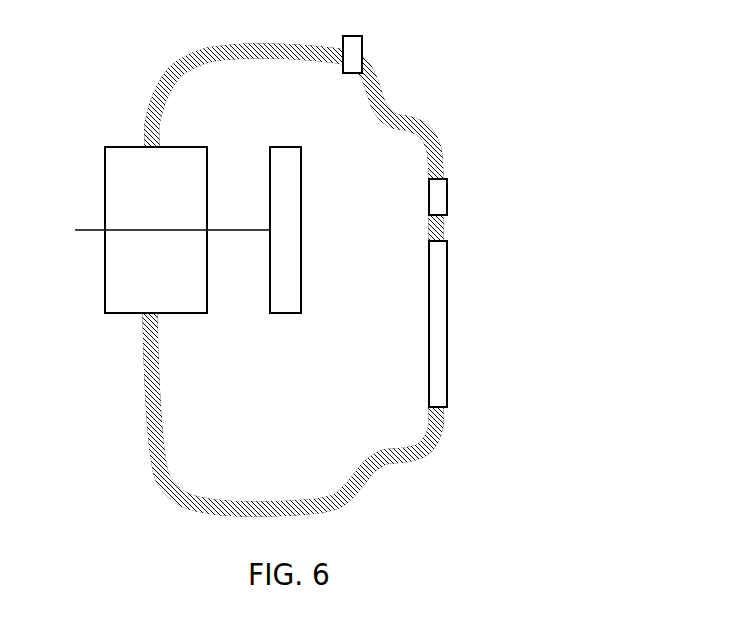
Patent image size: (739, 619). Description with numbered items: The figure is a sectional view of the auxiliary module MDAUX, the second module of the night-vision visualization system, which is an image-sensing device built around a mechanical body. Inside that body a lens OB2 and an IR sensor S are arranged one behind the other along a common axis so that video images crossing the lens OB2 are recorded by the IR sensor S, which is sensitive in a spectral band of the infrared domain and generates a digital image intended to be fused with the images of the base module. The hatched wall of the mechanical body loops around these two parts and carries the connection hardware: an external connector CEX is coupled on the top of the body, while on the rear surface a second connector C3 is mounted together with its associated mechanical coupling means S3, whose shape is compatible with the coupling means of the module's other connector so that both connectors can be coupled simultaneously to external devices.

The auxiliary module MDAUX is at (545, 121).
The lens OB2 is at (125, 201).
The IR sensor S is at (287, 302).
The external connector CEX is at (355, 42).
The mechanical coupling means S3 is at (443, 194).
The second connector C3 is at (443, 313).